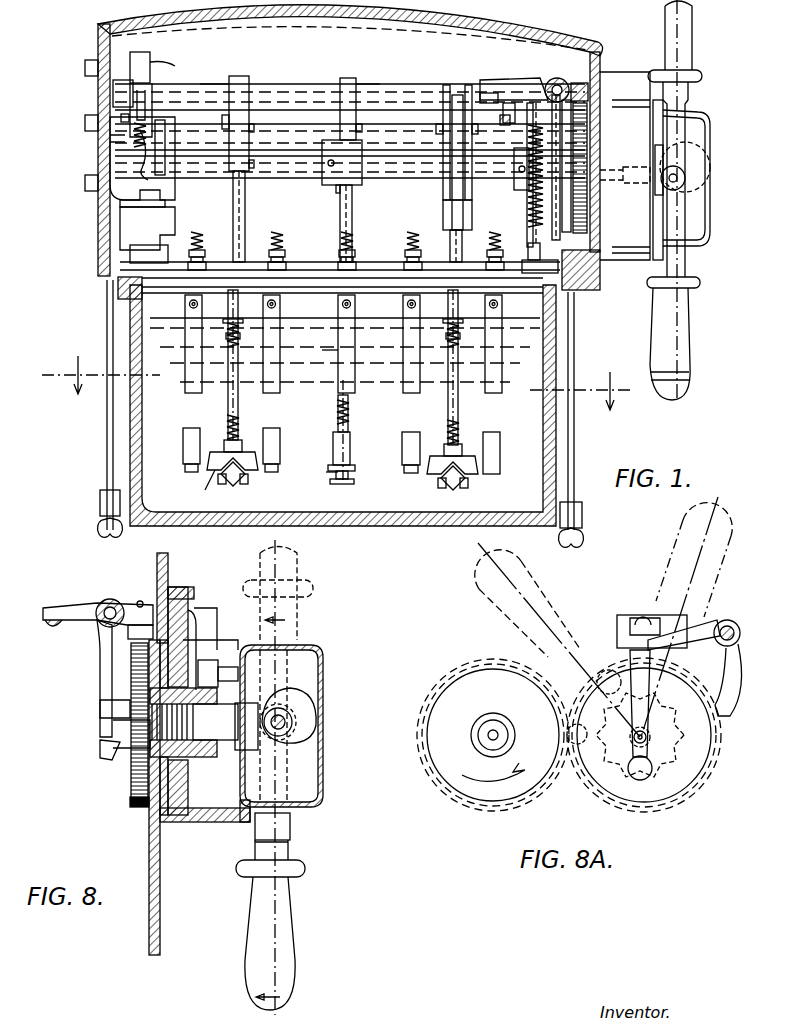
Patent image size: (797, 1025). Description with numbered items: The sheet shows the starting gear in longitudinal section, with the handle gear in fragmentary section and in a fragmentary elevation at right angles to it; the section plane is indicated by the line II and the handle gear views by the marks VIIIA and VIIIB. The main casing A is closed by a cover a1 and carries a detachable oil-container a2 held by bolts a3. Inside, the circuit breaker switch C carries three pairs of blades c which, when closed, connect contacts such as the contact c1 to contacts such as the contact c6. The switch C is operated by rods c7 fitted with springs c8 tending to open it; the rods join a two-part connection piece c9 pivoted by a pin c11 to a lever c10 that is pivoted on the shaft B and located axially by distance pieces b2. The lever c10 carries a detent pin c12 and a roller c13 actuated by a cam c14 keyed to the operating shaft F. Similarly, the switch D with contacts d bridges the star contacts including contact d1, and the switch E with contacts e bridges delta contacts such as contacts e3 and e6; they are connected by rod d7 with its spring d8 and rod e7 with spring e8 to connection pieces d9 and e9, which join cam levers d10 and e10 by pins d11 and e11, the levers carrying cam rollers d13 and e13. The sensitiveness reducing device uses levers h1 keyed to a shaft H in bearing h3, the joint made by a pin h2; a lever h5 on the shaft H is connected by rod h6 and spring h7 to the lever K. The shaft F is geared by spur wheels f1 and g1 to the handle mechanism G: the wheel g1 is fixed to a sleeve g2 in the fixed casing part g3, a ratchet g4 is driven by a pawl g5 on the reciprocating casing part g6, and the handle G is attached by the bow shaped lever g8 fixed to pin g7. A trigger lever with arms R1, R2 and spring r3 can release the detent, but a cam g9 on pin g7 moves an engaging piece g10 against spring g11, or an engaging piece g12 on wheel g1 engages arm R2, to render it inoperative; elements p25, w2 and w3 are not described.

In FIG. 1, the cover a1 is at (505, 20).
In FIG. 1, the main casing A is at (98, 222).
In FIG. 8, the main casing A is at (160, 890).
In FIG. 1, the oil-container a2 is at (130, 424).
In FIG. 1, the bolts a3 is at (107, 320).
In FIG. 1, the section line II is at (70, 370).
In FIG. 1, the distance pieces b2 is at (203, 82).
In FIG. 1, the shaft B is at (296, 98).
In FIG. 1, the operating shaft F is at (380, 178).
In FIG. 1, the bearing h3 is at (92, 62).
In FIG. 1, the shaft H is at (176, 70).
In FIG. 1, the lever h5 is at (113, 95).
In FIG. 1, the rod h6 is at (121, 120).
In FIG. 1, the lever K is at (150, 172).
In FIG. 1, the pin h2 is at (150, 135).
In FIG. 1, the spring h7 is at (120, 142).
In FIG. 1, the levers h1 is at (165, 192).
In FIG. 1, the cam lever e10 is at (250, 78).
In FIG. 1, the cam roller e13 is at (212, 93).
In FIG. 1, the pin e11 is at (250, 128).
In FIG. 1, the connection piece e9 is at (250, 166).
In FIG. 1, the cam lever d10 is at (350, 78).
In FIG. 1, the cam roller d13 is at (360, 84).
In FIG. 1, the pin d11 is at (362, 130).
In FIG. 1, the connection piece d9 is at (343, 176).
In FIG. 1, the roller c13 is at (458, 90).
In FIG. 1, the cam c14 is at (450, 148).
In FIG. 1, the pin c11 is at (472, 132).
In FIG. 1, the lever c10 is at (472, 163).
In FIG. 1, the connection piece c9 is at (445, 220).
In FIG. 1, the detent pin c12 is at (465, 200).
In FIG. 1, the link p25 is at (514, 96).
In FIG. 1, the bell crank trigger lever arm R1 is at (530, 80).
In FIG. 8, the bell crank trigger lever arm R1 is at (80, 606).
In FIG. 8A, the bell crank trigger lever arm R1 is at (679, 686).
In FIG. 1, the spring r3 is at (559, 78).
In FIG. 8, the spring r3 is at (116, 600).
In FIG. 1, the rod w2 is at (533, 110).
In FIG. 1, the spring w3 is at (530, 212).
In FIG. 1, the engaging piece g12 is at (560, 210).
In FIG. 8, the engaging piece g12 is at (131, 770).
In FIG. 1, the spur wheel g1 is at (587, 212).
In FIG. 8, the spur wheel g1 is at (138, 808).
In FIG. 8A, the spur wheel g1 is at (708, 766).
In FIG. 1, the bell crank trigger lever arm R2 is at (571, 142).
In FIG. 8, the bell crank trigger lever arm R2 is at (100, 670).
In FIG. 1, the angularly reciprocating casing part g6 is at (655, 166).
In FIG. 8, the angularly reciprocating casing part g6 is at (323, 660).
In FIG. 1, the engaging piece g10 is at (663, 150).
In FIG. 8, the engaging piece g10 is at (125, 728).
In FIG. 1, the cam g9 is at (685, 167).
In FIG. 8, the cam g9 is at (303, 714).
In FIG. 1, the pin g7 is at (680, 186).
In FIG. 8, the pin g7 is at (288, 733).
In FIG. 1, the bow shaped lever g8 is at (682, 226).
In FIG. 8, the bow shaped lever g8 is at (292, 815).
In FIG. 1, the handle G is at (692, 52).
In FIG. 8, the handle G is at (290, 897).
In FIG. 8A, the handle G is at (482, 590).
In FIG. 1, the contact e6 is at (190, 394).
In FIG. 1, the contact e3 is at (280, 376).
In FIG. 1, the rod d7 is at (338, 406).
In FIG. 1, the contact c6 is at (405, 398).
In FIG. 1, the contact c1 is at (502, 372).
In FIG. 1, the spring e8 is at (240, 402).
In FIG. 1, the rod e7 is at (230, 336).
In FIG. 1, the three pair contact switch E is at (200, 470).
In FIG. 1, the contacts e is at (183, 446).
In FIG. 1, the rod d8 is at (350, 396).
In FIG. 1, the contact d1 is at (340, 344).
In FIG. 1, the contacts d is at (333, 446).
In FIG. 1, the switch D is at (326, 472).
In FIG. 1, the springs c8 is at (460, 430).
In FIG. 1, the rods c7 is at (452, 322).
In FIG. 1, the circuit breaker switch C is at (428, 470).
In FIG. 1, the blades c is at (402, 446).
In FIG. 8, the fixed casing part g3 is at (194, 608).
In FIG. 8, the ratchet g4 is at (212, 760).
In FIG. 8A, the ratchet g4 is at (672, 772).
In FIG. 8, the spring g11 is at (197, 722).
In FIG. 8, the pawl g5 is at (208, 662).
In FIG. 8A, the pawl g5 is at (580, 770).
In FIG. 8, the sleeve g2 is at (112, 712).
In FIG. 8A, the spur wheel f1 is at (460, 800).
In FIG. 8, the section line VIIIA is at (276, 604).
In FIG. 8, the section line VIIIB is at (281, 986).